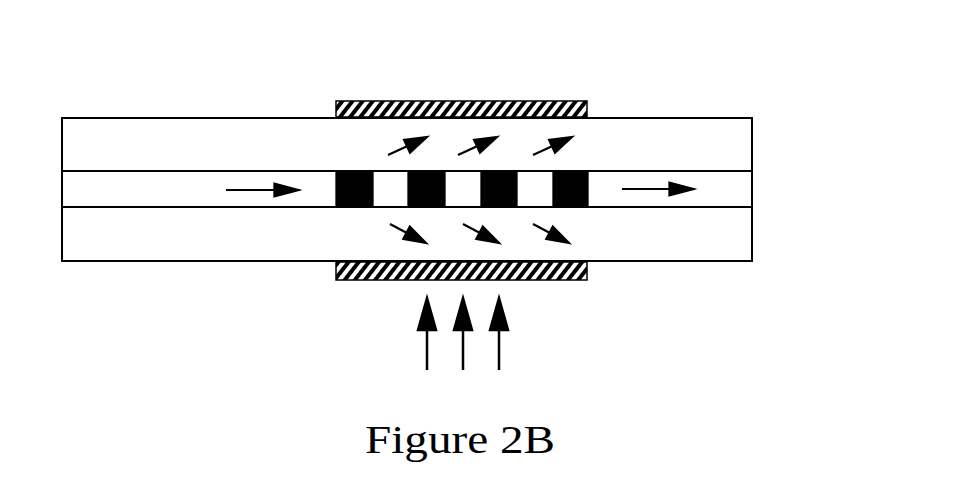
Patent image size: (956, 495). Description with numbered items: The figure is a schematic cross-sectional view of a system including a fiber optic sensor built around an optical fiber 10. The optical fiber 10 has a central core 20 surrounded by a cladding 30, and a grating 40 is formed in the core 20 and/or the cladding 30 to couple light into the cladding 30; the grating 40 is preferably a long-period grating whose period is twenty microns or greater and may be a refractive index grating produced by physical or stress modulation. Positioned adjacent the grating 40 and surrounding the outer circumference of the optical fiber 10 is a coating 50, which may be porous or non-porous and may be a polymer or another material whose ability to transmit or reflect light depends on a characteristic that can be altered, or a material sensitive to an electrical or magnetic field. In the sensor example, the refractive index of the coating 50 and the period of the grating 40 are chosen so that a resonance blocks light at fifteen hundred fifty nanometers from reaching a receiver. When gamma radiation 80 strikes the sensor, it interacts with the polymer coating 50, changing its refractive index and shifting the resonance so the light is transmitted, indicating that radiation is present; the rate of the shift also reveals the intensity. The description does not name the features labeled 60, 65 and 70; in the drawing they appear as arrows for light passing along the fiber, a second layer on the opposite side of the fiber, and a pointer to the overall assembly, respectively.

The optical fiber 10 is at (751, 150).
The core 20 is at (125, 166).
The cladding 30 is at (207, 153).
The grating 40 is at (451, 178).
The coating 50 is at (388, 100).
The light beam 60 is at (246, 190).
The bottom electrode 65 is at (553, 243).
The device structure 70 is at (66, 84).
The gamma radiation 80 is at (463, 350).